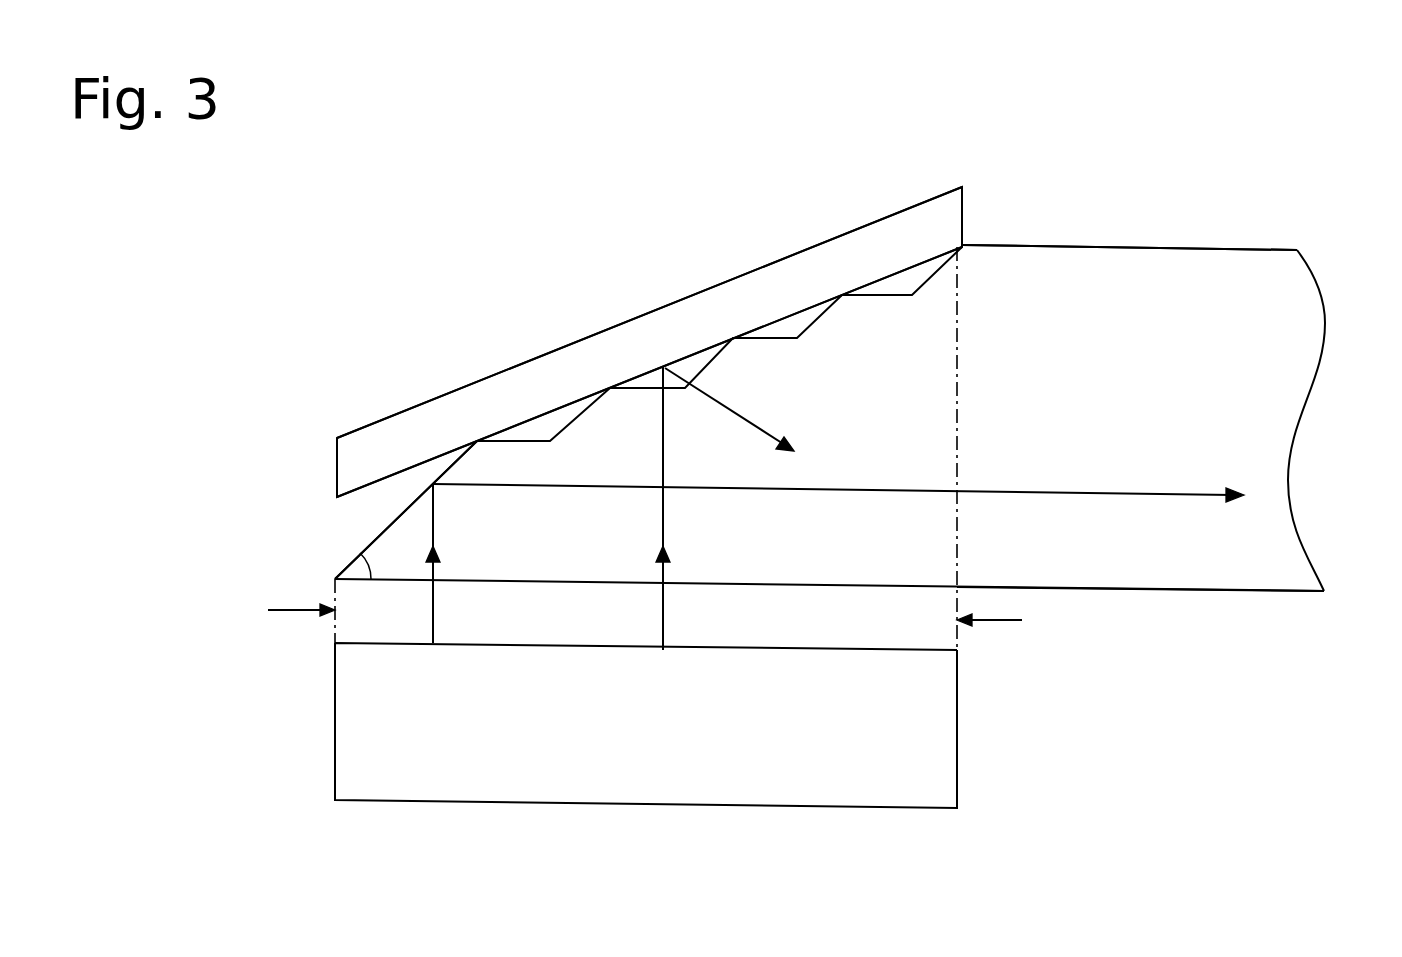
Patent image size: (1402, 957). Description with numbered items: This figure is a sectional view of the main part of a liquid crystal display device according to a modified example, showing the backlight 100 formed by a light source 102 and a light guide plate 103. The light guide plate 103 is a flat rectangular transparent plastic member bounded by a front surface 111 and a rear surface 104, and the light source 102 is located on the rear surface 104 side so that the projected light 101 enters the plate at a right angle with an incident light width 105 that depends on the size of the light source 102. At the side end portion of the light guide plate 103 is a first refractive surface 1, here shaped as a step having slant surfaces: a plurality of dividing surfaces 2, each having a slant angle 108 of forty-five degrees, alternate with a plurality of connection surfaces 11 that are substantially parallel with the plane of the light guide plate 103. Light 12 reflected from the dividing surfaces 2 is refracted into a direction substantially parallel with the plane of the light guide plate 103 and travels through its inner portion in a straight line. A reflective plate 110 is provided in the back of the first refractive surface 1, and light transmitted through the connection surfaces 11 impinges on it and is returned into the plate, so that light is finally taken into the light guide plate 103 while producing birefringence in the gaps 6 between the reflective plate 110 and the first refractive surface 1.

The first refractive surface 1 is at (785, 389).
The dividing surfaces 2 is at (398, 512).
The gaps 6 is at (395, 495).
The connection surfaces 11 is at (515, 443).
The light reflected from the dividing surfaces 12 is at (764, 493).
The backlight 100 is at (442, 315).
The light 101 is at (436, 612).
The light source 102 is at (876, 806).
The light guide plate 103 is at (1320, 320).
The rear surface 104 is at (1209, 592).
The incident light width 105 is at (300, 615).
The slant angle 108 is at (347, 566).
The reflective plate 110 is at (905, 280).
The front surface 111 is at (1208, 247).